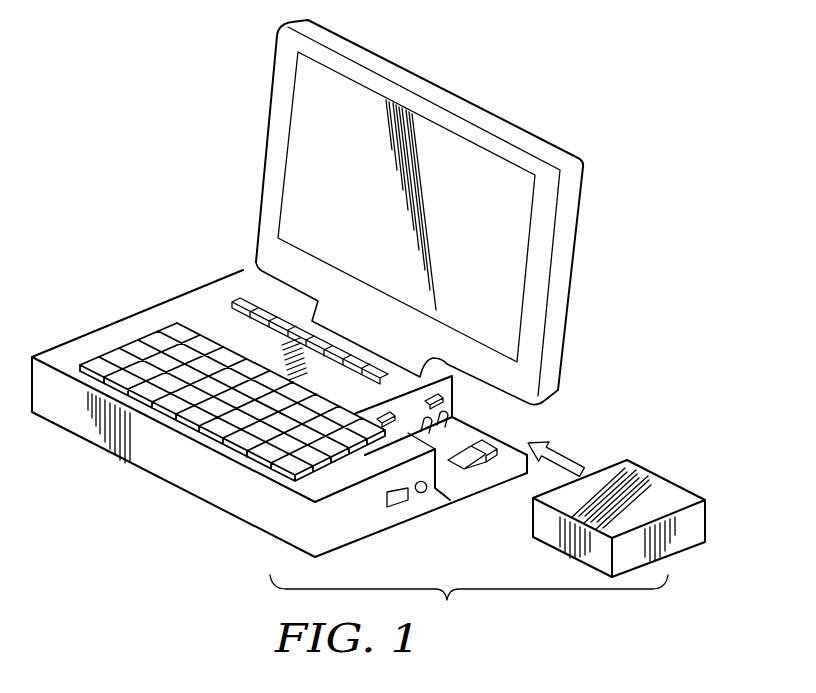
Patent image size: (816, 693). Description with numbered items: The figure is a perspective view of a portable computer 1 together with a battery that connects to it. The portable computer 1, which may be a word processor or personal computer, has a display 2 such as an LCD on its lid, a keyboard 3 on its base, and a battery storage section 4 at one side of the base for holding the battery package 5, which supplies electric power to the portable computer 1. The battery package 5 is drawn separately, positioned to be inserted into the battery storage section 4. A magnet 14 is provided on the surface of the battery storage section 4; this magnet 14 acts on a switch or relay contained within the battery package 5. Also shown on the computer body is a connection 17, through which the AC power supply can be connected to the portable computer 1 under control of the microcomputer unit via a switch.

The portable computer 1 is at (134, 314).
The display 2 is at (488, 168).
The keyboard 3 is at (225, 418).
The battery storage section 4 is at (462, 432).
The battery package 5 is at (670, 476).
The magnet 14 is at (467, 465).
The connection 17 is at (423, 493).